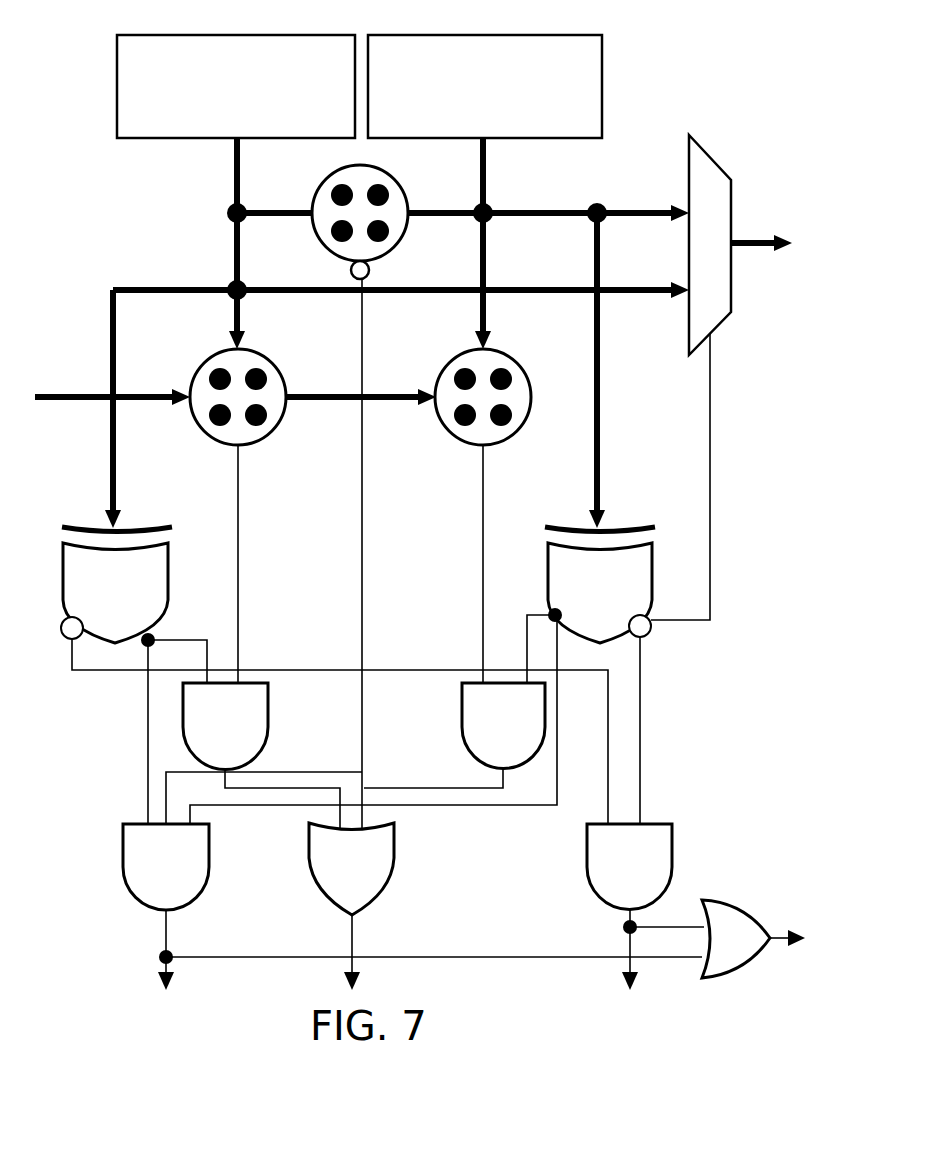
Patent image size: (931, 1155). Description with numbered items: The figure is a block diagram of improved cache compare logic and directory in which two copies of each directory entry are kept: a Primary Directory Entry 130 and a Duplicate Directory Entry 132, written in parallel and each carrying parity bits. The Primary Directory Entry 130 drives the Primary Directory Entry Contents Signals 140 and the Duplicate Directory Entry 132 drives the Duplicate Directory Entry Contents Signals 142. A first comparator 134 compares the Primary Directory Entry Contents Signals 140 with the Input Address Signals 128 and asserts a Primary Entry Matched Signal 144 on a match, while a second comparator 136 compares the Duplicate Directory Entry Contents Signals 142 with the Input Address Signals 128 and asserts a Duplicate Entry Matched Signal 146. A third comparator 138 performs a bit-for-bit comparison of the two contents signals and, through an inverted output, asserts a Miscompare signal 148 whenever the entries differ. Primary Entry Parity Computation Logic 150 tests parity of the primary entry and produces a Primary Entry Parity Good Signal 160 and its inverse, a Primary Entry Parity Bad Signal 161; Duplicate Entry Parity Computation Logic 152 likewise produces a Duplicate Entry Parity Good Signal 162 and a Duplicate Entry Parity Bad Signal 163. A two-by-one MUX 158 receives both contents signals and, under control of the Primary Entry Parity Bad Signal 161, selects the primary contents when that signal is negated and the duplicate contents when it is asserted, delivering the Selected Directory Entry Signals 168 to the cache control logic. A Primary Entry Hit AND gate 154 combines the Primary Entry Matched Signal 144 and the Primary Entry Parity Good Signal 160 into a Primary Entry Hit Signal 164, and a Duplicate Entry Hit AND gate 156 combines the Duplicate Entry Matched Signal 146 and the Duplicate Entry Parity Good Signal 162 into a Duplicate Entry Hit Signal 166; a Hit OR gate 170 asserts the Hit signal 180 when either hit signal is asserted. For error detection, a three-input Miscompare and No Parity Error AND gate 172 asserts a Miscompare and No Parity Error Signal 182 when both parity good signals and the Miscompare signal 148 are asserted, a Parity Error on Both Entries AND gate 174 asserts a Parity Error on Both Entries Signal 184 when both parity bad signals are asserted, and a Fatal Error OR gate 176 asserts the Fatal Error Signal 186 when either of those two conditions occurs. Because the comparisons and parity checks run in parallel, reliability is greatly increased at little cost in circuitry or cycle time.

The Input Address Signals 128 is at (82, 393).
The Primary Directory Entry 130 is at (604, 118).
The Duplicate Directory Entry 132 is at (117, 118).
The first comparator 134 is at (505, 443).
The second comparator 136 is at (262, 445).
The third comparator 138 is at (322, 186).
The Primary Directory Entry Contents Signals 140 is at (485, 165).
The Duplicate Directory Entry Contents Signals 142 is at (237, 178).
The Primary Entry Matched Signal 144 is at (483, 556).
The Duplicate Entry Matched Signal 146 is at (240, 530).
The Miscompare signal 148 is at (364, 525).
The Primary Entry Parity Computation Logic 150 is at (653, 556).
The Duplicate Entry Parity Computation Logic 152 is at (170, 549).
The Primary Entry Hit AND gate 154 is at (462, 692).
The Duplicate Entry Hit AND gate 156 is at (269, 700).
The 2×1 MUX 158 is at (731, 312).
The Primary Entry Parity Good Signal 160 is at (557, 736).
The Primary Entry Parity Bad Signal 161 is at (712, 420).
The Duplicate Entry Parity Good Signal 162 is at (148, 740).
The Duplicate Entry Parity Bad Signal 163 is at (71, 673).
The Primary Entry Hit Signal 164 is at (456, 788).
The Duplicate Entry Hit Signal 166 is at (290, 775).
The Selected Directory Entry Signals 168 is at (734, 240).
The Hit OR gate 170 is at (394, 846).
The Miscompare and No Parity Error AND gate 172 is at (123, 855).
The Parity Error on Both Entries AND gate 174 is at (587, 840).
The Fatal Error OR gate 176 is at (713, 898).
The Hit signal 180 is at (355, 938).
The Miscompare and No Parity Error Signal 182 is at (165, 926).
The Parity Error on Both Entries Signal 184 is at (628, 946).
The Fatal Error Signal 186 is at (774, 946).